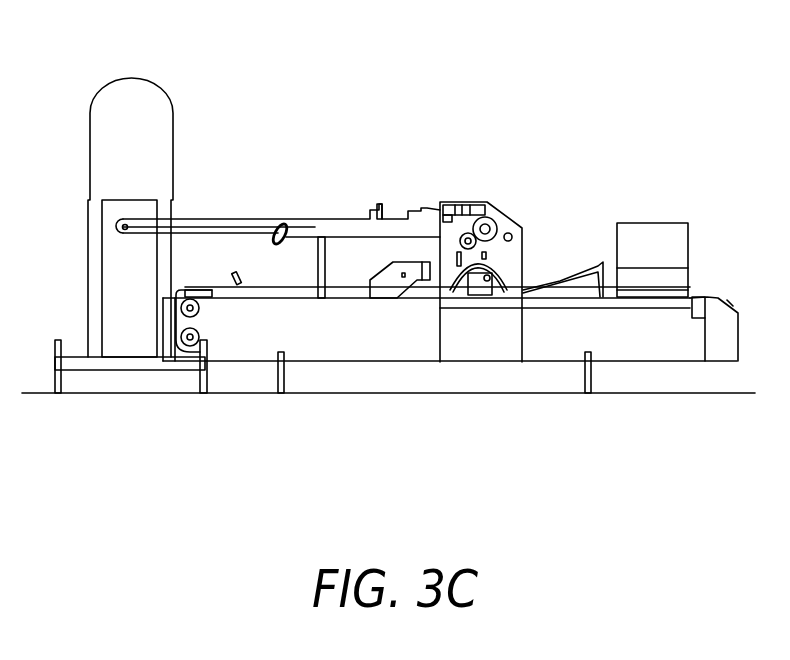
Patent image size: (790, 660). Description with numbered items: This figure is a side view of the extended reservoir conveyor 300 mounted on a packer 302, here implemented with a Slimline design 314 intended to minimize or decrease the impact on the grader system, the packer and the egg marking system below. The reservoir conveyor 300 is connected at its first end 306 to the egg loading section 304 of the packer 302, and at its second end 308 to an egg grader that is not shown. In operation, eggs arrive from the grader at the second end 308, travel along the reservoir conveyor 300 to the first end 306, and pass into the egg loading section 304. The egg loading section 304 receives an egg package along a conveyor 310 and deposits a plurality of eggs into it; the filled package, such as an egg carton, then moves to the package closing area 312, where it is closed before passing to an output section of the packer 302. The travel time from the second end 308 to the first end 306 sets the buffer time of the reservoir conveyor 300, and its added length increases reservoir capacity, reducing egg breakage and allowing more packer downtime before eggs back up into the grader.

The reservoir conveyor 300 is at (215, 219).
The packer 302 is at (667, 350).
The egg loading section 304 is at (470, 203).
The first end 306 is at (303, 219).
The second end 308 is at (135, 213).
The conveyor 310 is at (545, 300).
The package closing area 312 is at (252, 285).
The Slimline design 314 is at (128, 123).